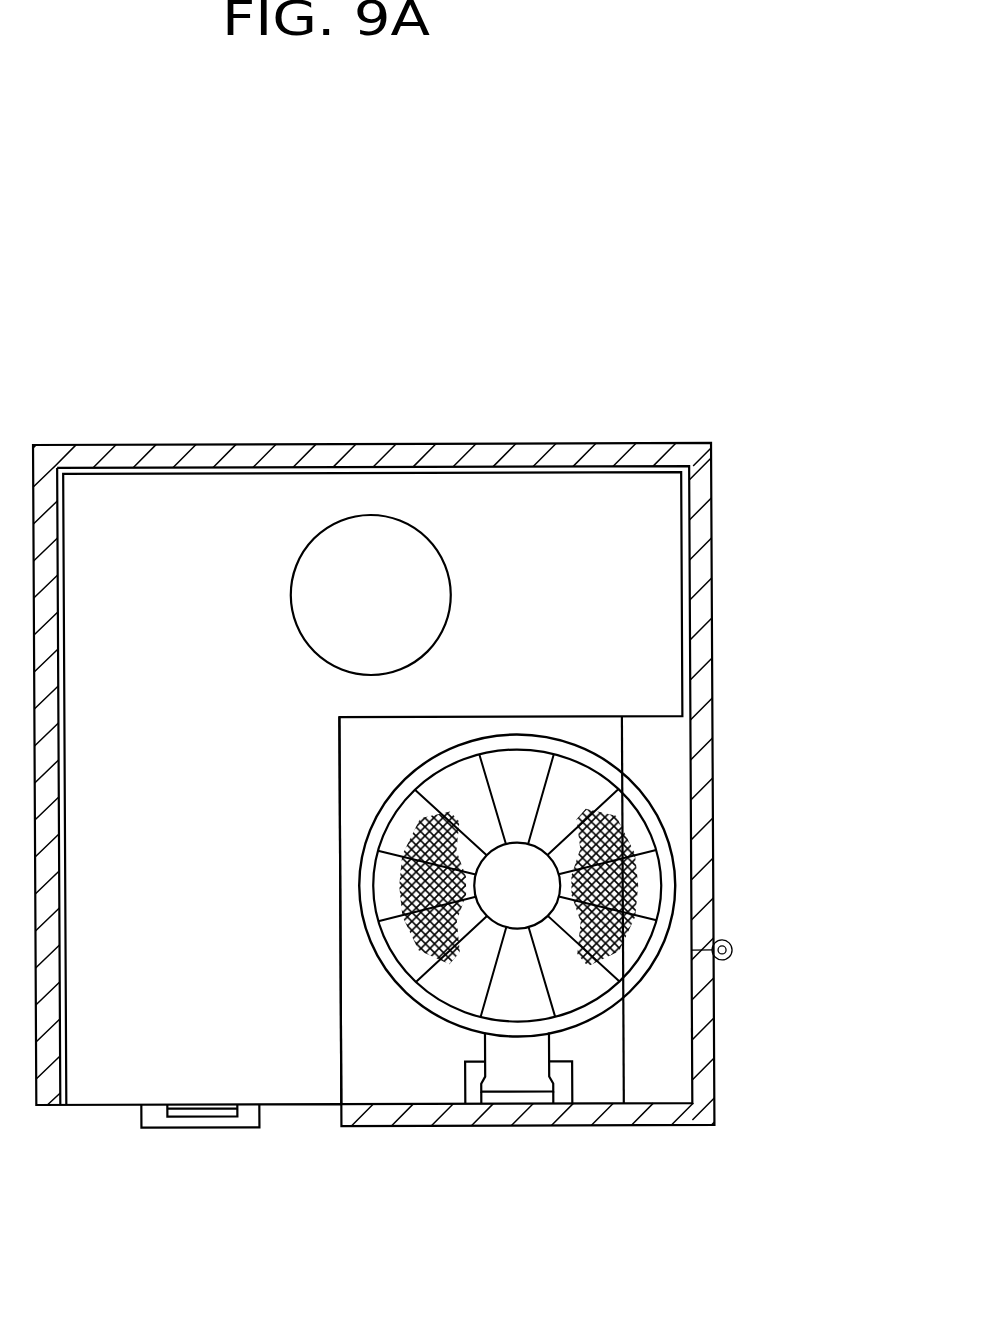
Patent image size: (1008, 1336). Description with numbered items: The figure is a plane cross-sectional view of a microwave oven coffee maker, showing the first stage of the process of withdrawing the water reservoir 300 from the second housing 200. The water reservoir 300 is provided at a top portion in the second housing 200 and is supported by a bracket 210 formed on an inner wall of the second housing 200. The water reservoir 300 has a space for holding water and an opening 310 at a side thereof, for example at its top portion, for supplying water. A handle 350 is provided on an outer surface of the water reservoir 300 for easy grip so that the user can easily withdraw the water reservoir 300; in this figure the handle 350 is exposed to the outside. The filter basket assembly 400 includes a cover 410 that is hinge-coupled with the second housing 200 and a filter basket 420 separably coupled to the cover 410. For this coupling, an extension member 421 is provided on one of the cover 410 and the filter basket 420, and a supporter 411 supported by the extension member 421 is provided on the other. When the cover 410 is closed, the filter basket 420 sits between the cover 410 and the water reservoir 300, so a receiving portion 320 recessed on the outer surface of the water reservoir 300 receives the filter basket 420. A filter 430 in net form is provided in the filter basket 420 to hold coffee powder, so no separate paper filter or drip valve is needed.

The second housing 200 is at (714, 622).
The bracket 210 is at (653, 772).
The water reservoir 300 is at (106, 1076).
The opening 310 is at (378, 545).
The receiving portion 320 is at (340, 1043).
The handle 350 is at (244, 1118).
The filter basket assembly 400 is at (621, 1016).
The cover 410 is at (717, 1037).
The supporter 411 is at (560, 1074).
The filter basket 420 is at (664, 811).
The extension member 421 is at (511, 1073).
The filter 430 is at (632, 882).